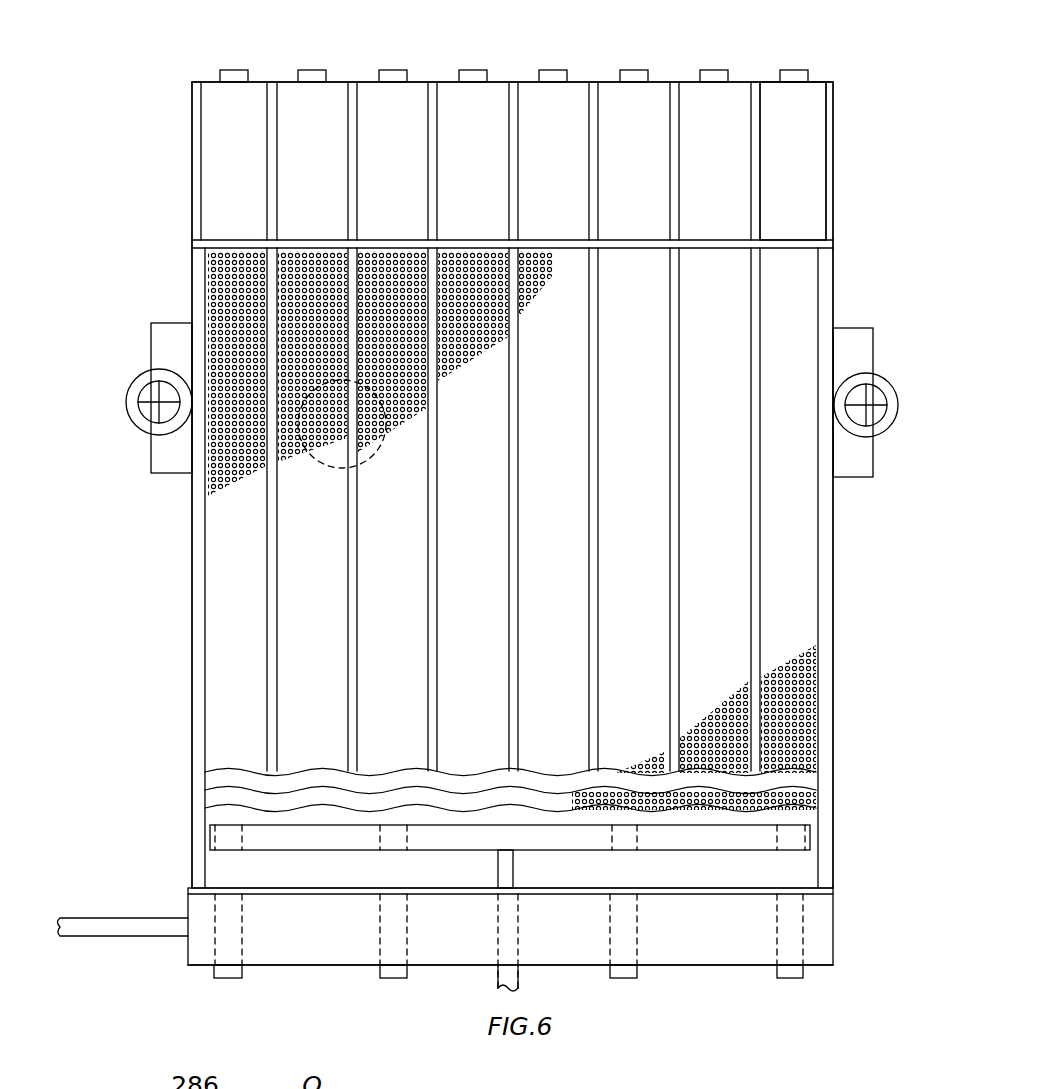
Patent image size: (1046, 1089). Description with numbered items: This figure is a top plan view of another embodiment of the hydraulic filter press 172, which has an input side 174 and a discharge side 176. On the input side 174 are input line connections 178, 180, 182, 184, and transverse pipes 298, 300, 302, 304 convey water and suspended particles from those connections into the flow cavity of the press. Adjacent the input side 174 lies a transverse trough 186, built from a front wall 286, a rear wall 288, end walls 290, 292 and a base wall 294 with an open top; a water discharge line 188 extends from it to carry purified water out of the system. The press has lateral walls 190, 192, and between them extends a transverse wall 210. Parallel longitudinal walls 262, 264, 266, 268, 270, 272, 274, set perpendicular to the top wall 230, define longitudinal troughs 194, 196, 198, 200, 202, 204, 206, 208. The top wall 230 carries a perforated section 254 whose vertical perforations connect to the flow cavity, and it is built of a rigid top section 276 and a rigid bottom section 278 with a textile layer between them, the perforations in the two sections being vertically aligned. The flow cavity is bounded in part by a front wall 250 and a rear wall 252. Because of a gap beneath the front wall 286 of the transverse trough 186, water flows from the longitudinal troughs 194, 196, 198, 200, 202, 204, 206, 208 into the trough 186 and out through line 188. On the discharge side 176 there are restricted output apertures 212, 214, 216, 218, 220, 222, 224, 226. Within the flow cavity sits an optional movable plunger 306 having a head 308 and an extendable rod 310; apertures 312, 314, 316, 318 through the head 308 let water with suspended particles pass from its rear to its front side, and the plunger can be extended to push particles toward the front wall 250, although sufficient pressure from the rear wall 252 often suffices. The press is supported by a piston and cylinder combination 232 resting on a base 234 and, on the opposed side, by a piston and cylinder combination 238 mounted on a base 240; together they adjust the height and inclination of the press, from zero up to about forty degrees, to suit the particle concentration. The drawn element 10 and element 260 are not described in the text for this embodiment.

The particulate material 10 is at (366, 458).
The hydraulic filter press 172 is at (852, 222).
The input side 174 is at (340, 986).
The discharge side 176 is at (588, 74).
The input line connection 178 is at (230, 979).
The input line connection 180 is at (394, 979).
The input line connection 182 is at (622, 979).
The input line connection 184 is at (790, 979).
The transverse trough 186 is at (834, 940).
The water discharge line 188 is at (135, 918).
The lateral wall 190 is at (192, 676).
The lateral wall 192 is at (822, 630).
The longitudinal trough 194 is at (213, 572).
The longitudinal trough 196 is at (282, 640).
The longitudinal trough 198 is at (356, 664).
The longitudinal trough 200 is at (437, 600).
The longitudinal trough 202 is at (518, 624).
The longitudinal trough 204 is at (606, 692).
The longitudinal trough 206 is at (690, 626).
The longitudinal trough 208 is at (761, 577).
The transverse wall 210 is at (708, 249).
The restricted output aperture 212 is at (232, 70).
The restricted output aperture 214 is at (310, 70).
The restricted output aperture 216 is at (394, 70).
The restricted output aperture 218 is at (472, 70).
The restricted output aperture 220 is at (552, 70).
The restricted output aperture 222 is at (634, 70).
The restricted output aperture 224 is at (714, 70).
The restricted output aperture 226 is at (794, 70).
The top wall 230 is at (806, 783).
The piston and cylinder combination 232 is at (130, 416).
The base 234 is at (172, 474).
The piston and cylinder combination 238 is at (884, 382).
The base 240 is at (870, 478).
The front wall 250 is at (244, 82).
The rear wall 252 is at (796, 888).
The perforated section 254 is at (804, 557).
The upper chamber 260 is at (790, 156).
The longitudinal wall 262 is at (277, 503).
The longitudinal wall 264 is at (358, 580).
The longitudinal wall 266 is at (438, 548).
The longitudinal wall 268 is at (518, 526).
The longitudinal wall 270 is at (599, 530).
The longitudinal wall 272 is at (680, 498).
The longitudinal wall 274 is at (761, 502).
The rigid top section 276 is at (808, 722).
The rigid bottom section 278 is at (806, 805).
The front wall 286 is at (362, 895).
The rear wall 288 is at (268, 966).
The end wall 290 is at (188, 948).
The end wall 292 is at (835, 966).
The base wall 294 is at (690, 966).
The transverse pipe 298 is at (244, 920).
The transverse pipe 300 is at (407, 940).
The transverse pipe 302 is at (637, 926).
The transverse pipe 304 is at (805, 916).
The movable plunger 306 is at (455, 822).
The head 308 is at (328, 851).
The extendable rod 310 is at (518, 942).
The aperture 312 is at (244, 852).
The aperture 314 is at (407, 852).
The aperture 316 is at (621, 852).
The aperture 318 is at (790, 852).